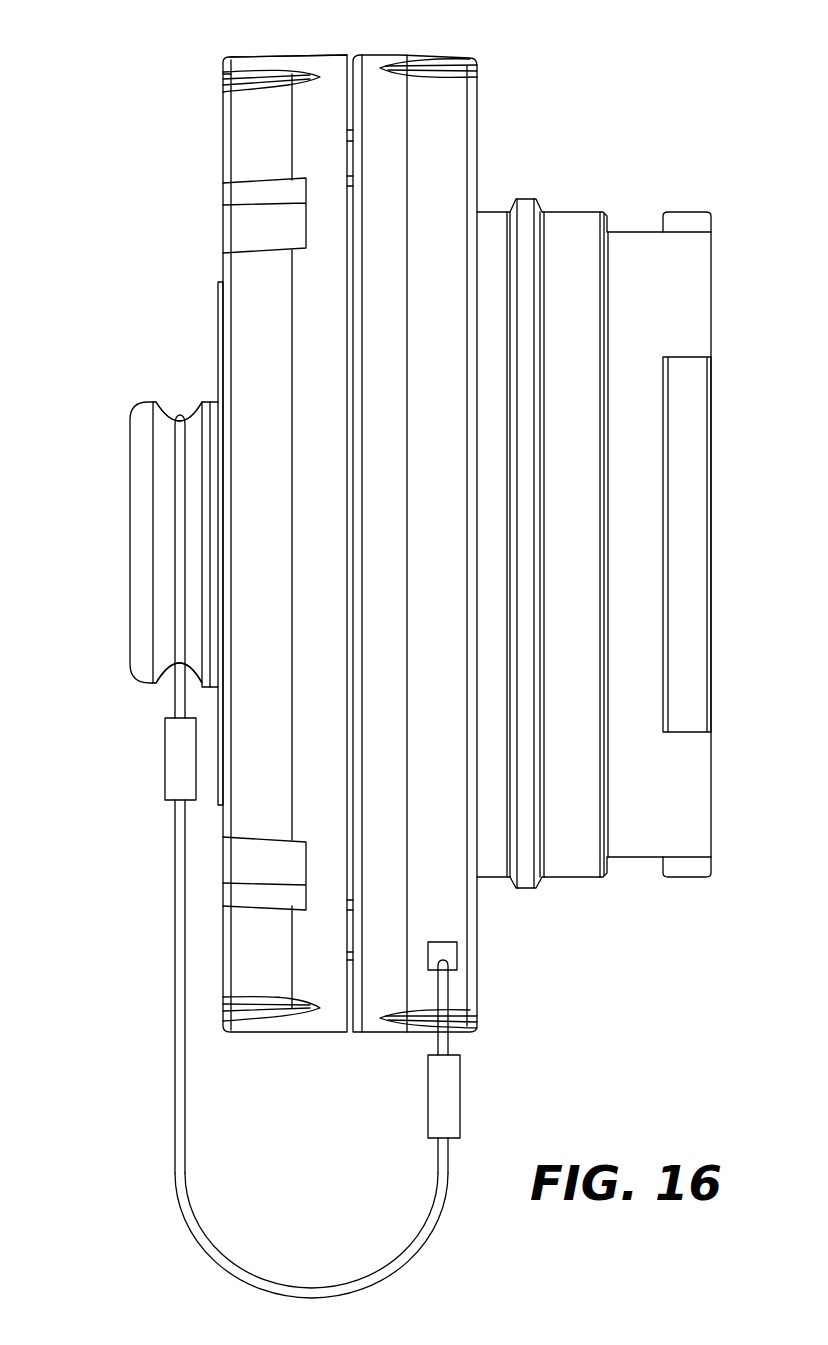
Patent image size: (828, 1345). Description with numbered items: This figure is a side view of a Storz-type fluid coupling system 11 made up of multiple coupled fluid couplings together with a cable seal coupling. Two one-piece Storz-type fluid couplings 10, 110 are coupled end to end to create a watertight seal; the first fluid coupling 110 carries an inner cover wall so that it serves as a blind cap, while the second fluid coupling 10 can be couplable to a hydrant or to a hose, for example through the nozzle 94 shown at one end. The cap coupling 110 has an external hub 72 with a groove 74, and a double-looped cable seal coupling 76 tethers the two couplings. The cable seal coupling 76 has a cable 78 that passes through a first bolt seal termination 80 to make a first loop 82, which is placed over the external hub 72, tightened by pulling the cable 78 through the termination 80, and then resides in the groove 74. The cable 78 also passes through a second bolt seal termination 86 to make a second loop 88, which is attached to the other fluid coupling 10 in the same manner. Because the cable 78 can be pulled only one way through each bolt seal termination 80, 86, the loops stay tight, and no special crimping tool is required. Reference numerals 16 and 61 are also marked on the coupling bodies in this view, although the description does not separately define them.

The one-piece Storz-type fluid coupling 10 is at (440, 56).
The Storz-type fluid coupling system 11 is at (142, 66).
The housing cap 16 is at (285, 55).
The housing cover 61 is at (223, 153).
The external hub 72 is at (128, 520).
The groove 74 is at (163, 412).
The double-looped cable seal coupling 76 is at (170, 1202).
The cable 78 is at (175, 1057).
The first bolt seal termination 80 is at (165, 757).
The first loop 82 is at (158, 697).
The second bolt seal termination 86 is at (460, 1085).
The second loop 88 is at (452, 1042).
The nozzle 94 is at (628, 192).
The second Storz-type fluid coupling 110 is at (243, 56).